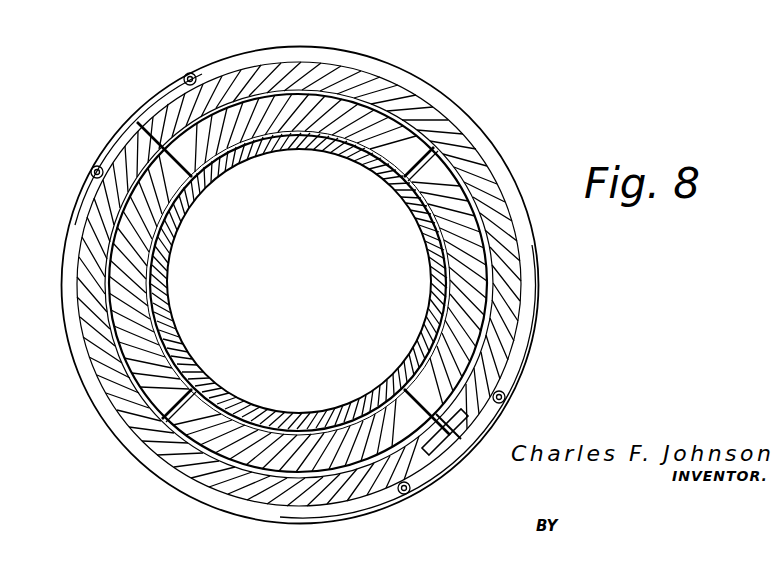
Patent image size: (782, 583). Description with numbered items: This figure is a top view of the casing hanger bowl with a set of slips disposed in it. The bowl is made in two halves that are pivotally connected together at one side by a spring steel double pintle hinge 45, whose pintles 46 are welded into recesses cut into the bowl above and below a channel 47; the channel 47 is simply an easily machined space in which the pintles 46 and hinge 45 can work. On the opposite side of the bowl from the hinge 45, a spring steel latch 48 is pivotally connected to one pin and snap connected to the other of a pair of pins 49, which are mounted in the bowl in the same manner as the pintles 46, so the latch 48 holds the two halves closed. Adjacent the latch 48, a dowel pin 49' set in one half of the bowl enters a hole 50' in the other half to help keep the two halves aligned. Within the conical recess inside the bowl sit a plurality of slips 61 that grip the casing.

The spring steel double pintle hinge 45 is at (115, 132).
The pintles 46 is at (184, 75).
The channel 47 is at (72, 240).
The spring steel latch 48 is at (452, 468).
The pins 49 is at (481, 475).
The dowel pin 49' is at (501, 424).
The hole 50' is at (432, 460).
The slips 61 is at (292, 130).